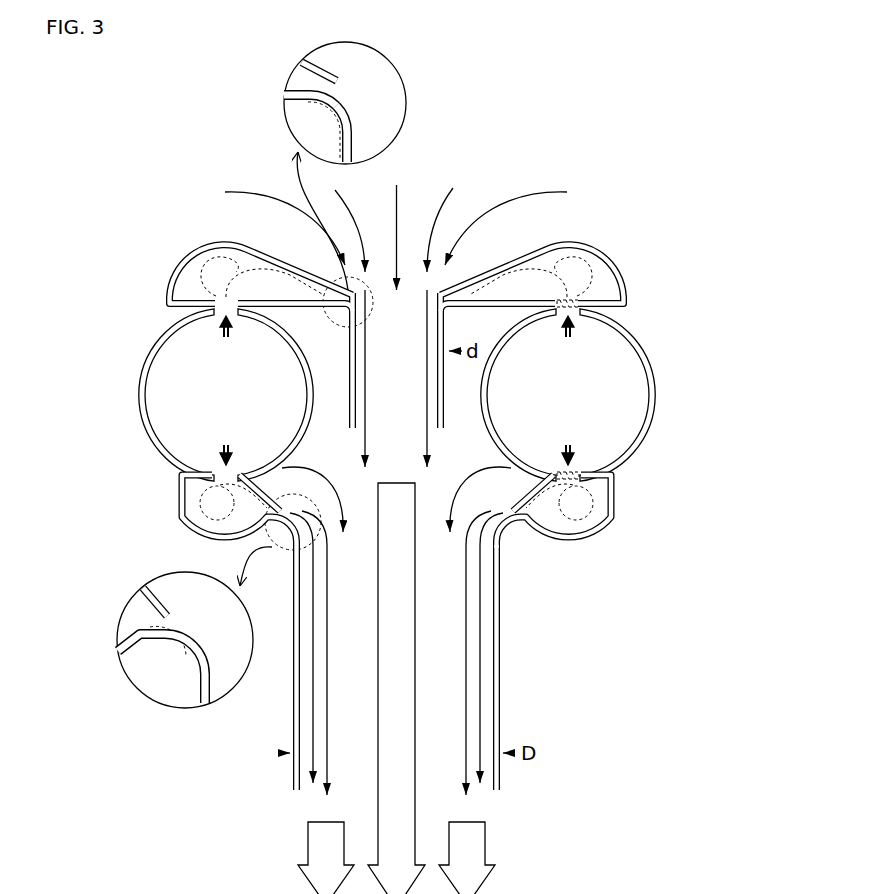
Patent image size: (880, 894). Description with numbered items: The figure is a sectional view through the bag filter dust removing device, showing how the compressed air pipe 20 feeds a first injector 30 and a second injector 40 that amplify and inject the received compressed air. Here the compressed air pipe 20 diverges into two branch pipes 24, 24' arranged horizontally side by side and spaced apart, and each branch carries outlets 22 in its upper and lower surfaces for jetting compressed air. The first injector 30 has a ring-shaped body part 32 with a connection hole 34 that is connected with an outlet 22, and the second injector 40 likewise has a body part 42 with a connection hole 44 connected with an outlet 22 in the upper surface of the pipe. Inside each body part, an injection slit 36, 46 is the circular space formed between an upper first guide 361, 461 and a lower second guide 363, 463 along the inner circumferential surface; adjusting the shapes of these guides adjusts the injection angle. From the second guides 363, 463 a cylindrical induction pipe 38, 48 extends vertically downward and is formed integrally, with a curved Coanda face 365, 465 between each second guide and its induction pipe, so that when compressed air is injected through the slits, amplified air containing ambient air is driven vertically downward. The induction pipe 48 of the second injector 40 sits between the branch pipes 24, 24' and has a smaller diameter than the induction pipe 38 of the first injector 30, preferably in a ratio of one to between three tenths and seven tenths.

The compressed air pipe 20 is at (133, 340).
The outlet 22 is at (563, 312).
The branch pipe 24 is at (194, 397).
The branch pipe 24' is at (601, 402).
The first injector 30 is at (594, 553).
The body part 32 is at (181, 510).
The connection hole 34 is at (580, 478).
The injection slit 36 is at (190, 648).
The first guide 361 is at (170, 610).
The second guide 363 is at (150, 640).
The curved Coanda face 365 is at (183, 667).
The induction pipe 38 is at (498, 680).
The second injector 40 is at (188, 232).
The body part 42 is at (573, 240).
The connection hole 44 is at (580, 302).
The injection slit 46 is at (350, 164).
The first guide 461 is at (338, 82).
The second guide 463 is at (320, 108).
The curved Coanda face 465 is at (360, 127).
The induction pipe 48 is at (348, 408).